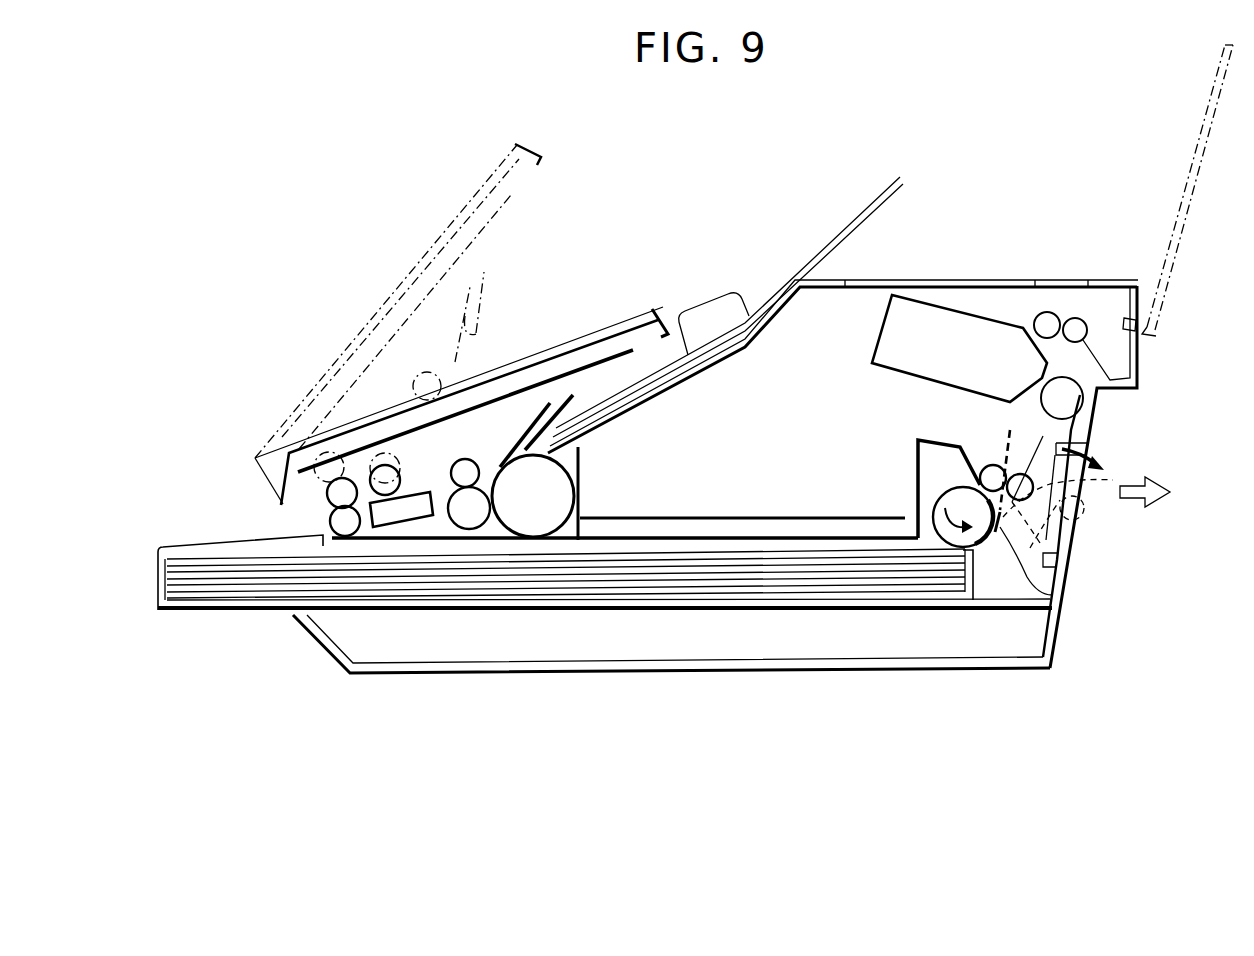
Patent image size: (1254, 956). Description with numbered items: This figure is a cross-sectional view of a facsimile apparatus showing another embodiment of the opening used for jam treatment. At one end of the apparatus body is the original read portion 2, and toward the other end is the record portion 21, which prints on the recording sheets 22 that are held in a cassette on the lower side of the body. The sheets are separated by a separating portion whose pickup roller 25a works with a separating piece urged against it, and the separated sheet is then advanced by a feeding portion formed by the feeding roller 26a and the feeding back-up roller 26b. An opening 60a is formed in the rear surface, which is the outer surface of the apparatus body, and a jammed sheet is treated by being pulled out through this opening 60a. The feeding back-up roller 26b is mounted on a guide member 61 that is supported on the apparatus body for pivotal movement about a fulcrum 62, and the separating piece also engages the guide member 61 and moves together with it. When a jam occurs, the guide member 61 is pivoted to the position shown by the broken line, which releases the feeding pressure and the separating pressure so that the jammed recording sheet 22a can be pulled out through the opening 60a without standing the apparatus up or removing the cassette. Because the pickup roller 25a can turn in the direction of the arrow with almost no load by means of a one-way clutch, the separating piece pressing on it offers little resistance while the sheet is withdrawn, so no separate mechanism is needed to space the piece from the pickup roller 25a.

The original read portion 2 is at (428, 448).
The record portion 21 is at (984, 300).
The recording sheets 22 is at (1015, 448).
The jammed recording sheet 22a is at (1066, 558).
The pickup roller 25a is at (943, 502).
The feeding roller 26a is at (985, 468).
The feeding back-up roller 26b is at (1080, 498).
The opening 60a is at (1085, 438).
The guide member 61 is at (1052, 595).
The fulcrum 62 is at (988, 570).